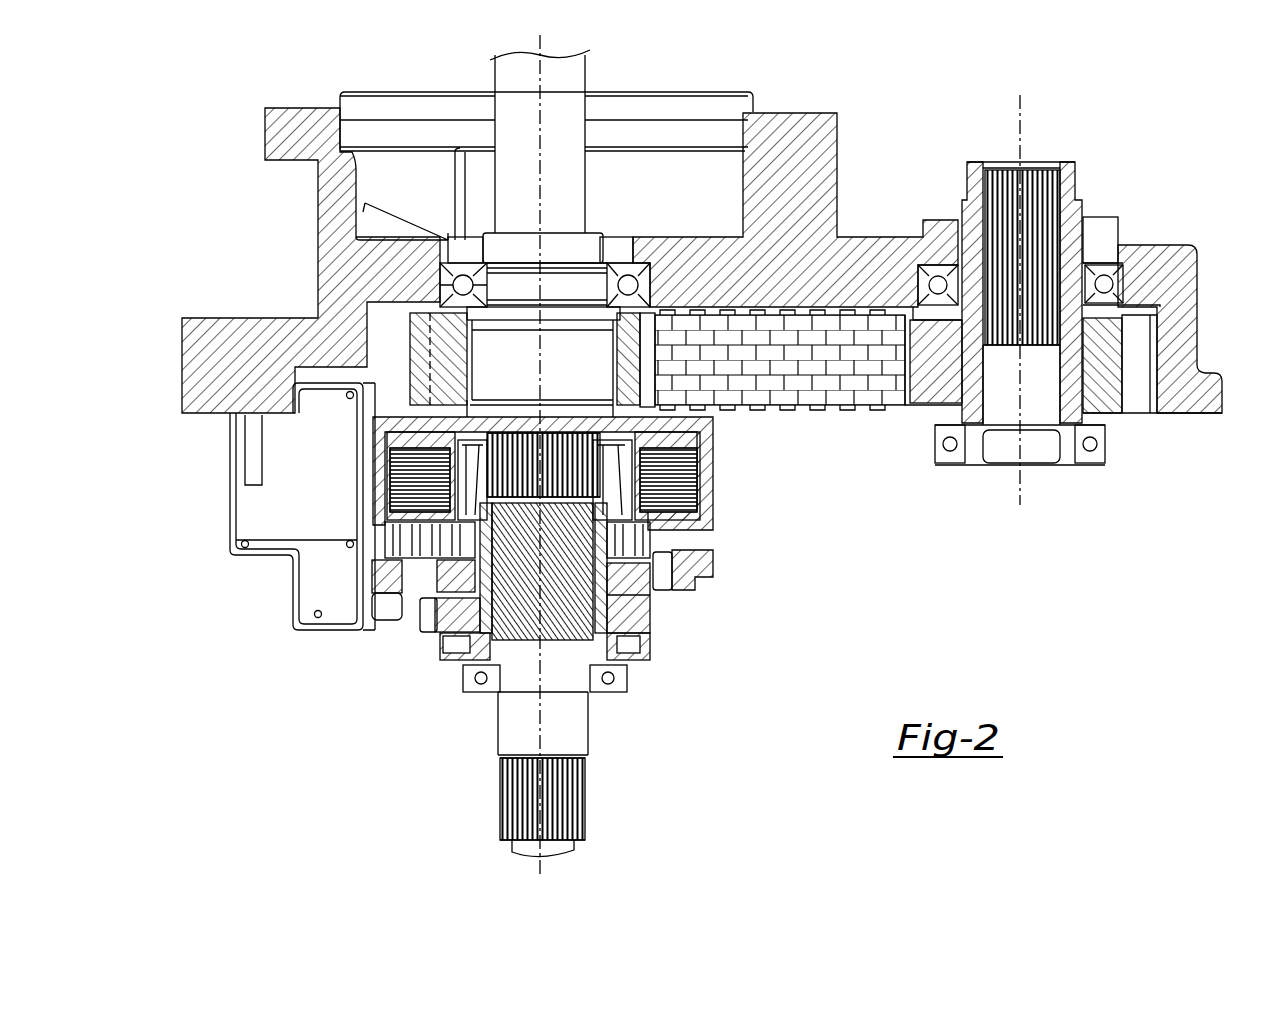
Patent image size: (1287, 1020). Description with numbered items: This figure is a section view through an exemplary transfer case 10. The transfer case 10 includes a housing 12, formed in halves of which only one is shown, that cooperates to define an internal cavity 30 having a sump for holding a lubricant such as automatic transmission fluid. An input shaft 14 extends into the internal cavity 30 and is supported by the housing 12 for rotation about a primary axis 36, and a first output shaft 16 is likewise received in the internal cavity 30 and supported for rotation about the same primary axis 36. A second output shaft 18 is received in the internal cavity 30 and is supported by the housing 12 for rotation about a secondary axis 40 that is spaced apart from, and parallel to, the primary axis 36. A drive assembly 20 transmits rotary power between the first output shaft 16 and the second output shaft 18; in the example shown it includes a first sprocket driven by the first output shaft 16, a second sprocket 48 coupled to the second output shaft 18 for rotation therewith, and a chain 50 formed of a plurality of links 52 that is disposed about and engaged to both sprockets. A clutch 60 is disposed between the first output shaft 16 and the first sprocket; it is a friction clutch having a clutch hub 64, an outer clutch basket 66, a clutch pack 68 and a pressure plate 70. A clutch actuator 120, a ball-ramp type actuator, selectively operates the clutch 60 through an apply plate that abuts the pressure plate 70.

The transfer case 10 is at (930, 102).
The housing 12 is at (1178, 262).
The input shaft 14 is at (578, 72).
The first output shaft 16 is at (578, 728).
The second output shaft 18 is at (1068, 185).
The drive assembly 20 is at (874, 447).
The internal cavity 30 is at (383, 330).
The primary axis 36 is at (540, 717).
The secondary axis 40 is at (1020, 490).
The second sprocket 48 is at (1110, 378).
The chain 50 is at (755, 408).
The links 52 is at (710, 320).
The clutch 60 is at (745, 506).
The clutch hub 64 is at (405, 440).
The outer clutch basket 66 is at (372, 510).
The clutch pack 68 is at (394, 480).
The pressure plate 70 is at (415, 560).
The clutch actuator 120 is at (678, 650).